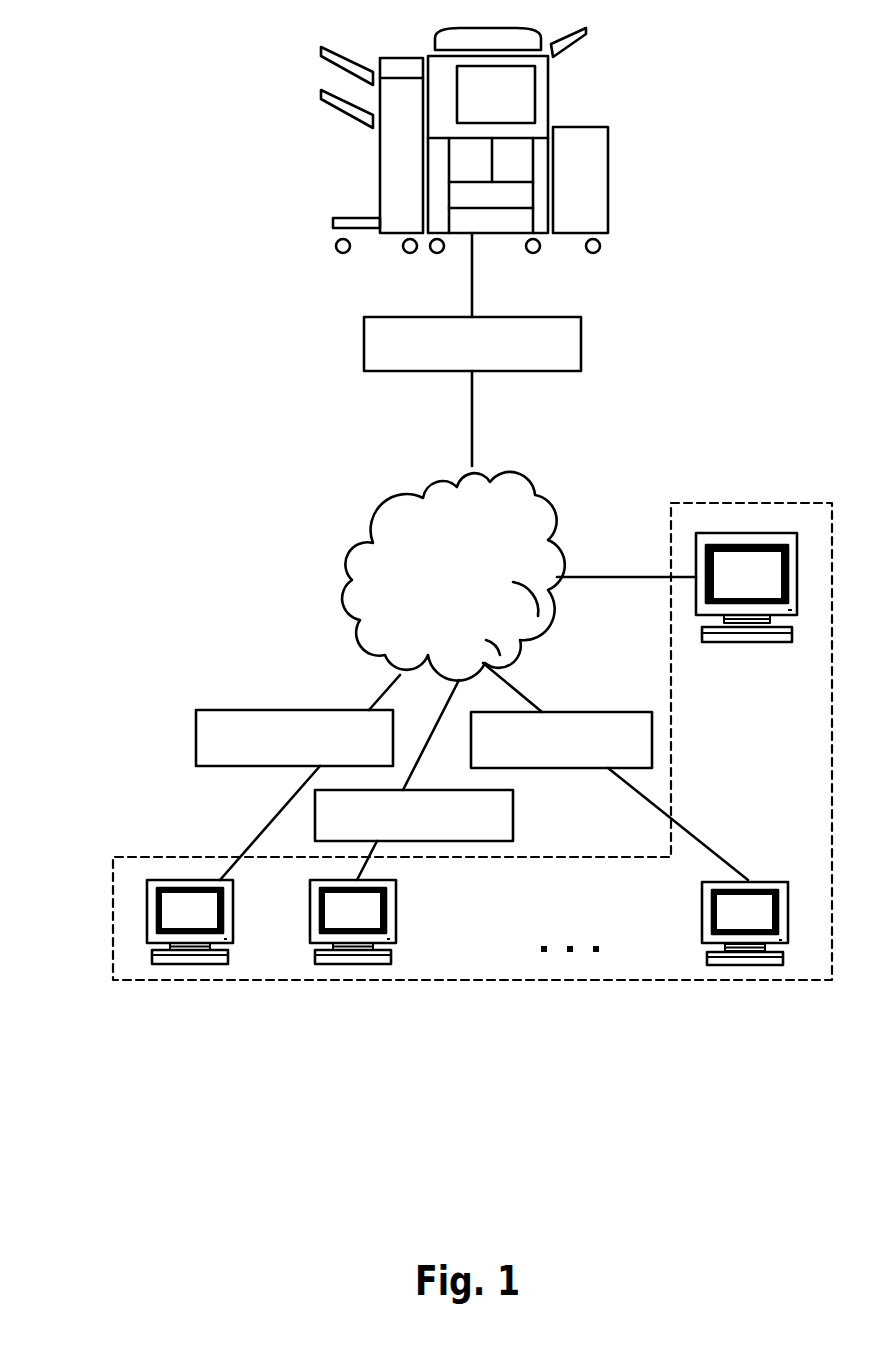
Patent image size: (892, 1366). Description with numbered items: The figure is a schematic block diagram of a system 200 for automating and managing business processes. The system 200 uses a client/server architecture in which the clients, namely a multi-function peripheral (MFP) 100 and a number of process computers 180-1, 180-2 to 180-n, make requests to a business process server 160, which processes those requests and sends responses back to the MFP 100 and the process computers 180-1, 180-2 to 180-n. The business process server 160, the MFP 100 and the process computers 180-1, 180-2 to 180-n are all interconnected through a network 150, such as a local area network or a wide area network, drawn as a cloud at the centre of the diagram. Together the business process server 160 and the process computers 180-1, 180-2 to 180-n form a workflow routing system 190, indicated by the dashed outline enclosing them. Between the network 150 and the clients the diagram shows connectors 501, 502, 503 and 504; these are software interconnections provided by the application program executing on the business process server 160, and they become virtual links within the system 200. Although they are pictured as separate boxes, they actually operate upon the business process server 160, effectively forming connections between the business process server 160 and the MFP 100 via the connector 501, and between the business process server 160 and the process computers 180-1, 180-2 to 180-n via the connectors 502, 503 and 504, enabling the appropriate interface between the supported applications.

The multi-function peripheral (MFP) 100 is at (608, 170).
The system 200 is at (142, 275).
The network 150 is at (357, 613).
The business process server 160 is at (757, 642).
The workflow routing system 190 is at (113, 857).
The process computer 180-1 is at (160, 964).
The process computer 180-2 is at (335, 964).
The process computer 180-n is at (757, 965).
The connector 501 is at (581, 348).
The connector 502 is at (196, 728).
The connector 503 is at (315, 817).
The connector 504 is at (577, 712).